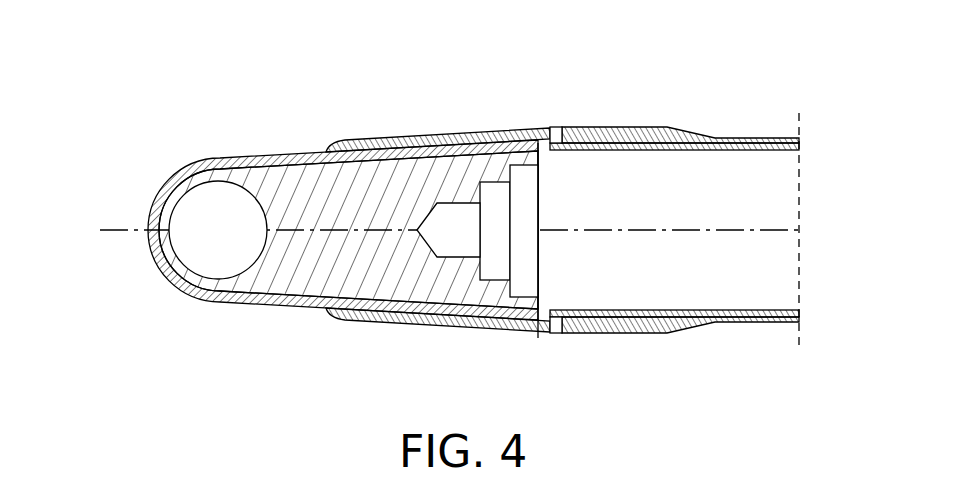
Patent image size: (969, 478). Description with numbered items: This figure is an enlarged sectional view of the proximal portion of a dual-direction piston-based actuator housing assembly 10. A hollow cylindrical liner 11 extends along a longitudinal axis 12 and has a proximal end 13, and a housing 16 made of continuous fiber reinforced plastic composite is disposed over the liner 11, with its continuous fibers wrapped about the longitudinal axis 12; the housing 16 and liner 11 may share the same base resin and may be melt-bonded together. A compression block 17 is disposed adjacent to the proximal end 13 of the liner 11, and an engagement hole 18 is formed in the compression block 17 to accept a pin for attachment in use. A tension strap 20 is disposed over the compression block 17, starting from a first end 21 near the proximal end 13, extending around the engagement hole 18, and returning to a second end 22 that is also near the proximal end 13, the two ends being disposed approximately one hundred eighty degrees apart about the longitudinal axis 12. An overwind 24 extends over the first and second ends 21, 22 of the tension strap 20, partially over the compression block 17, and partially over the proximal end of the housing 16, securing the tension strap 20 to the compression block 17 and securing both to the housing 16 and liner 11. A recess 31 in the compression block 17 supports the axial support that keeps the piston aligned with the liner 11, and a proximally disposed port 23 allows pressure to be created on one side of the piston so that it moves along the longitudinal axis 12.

The dual-direction piston-based actuator housing assembly 10 is at (140, 82).
The hollow cylindrical liner 11 is at (587, 150).
The longitudinal axis 12 is at (110, 230).
The proximal end 13 is at (674, 230).
The housing 16 is at (765, 138).
The compression block 17 is at (297, 277).
The engagement hole 18 is at (205, 257).
The tension strap 20 is at (287, 155).
The first end 21 is at (533, 165).
The second end 22 is at (538, 338).
The proximally disposed port 23 is at (557, 133).
The overwind 24 is at (420, 136).
The recess 31 is at (493, 195).